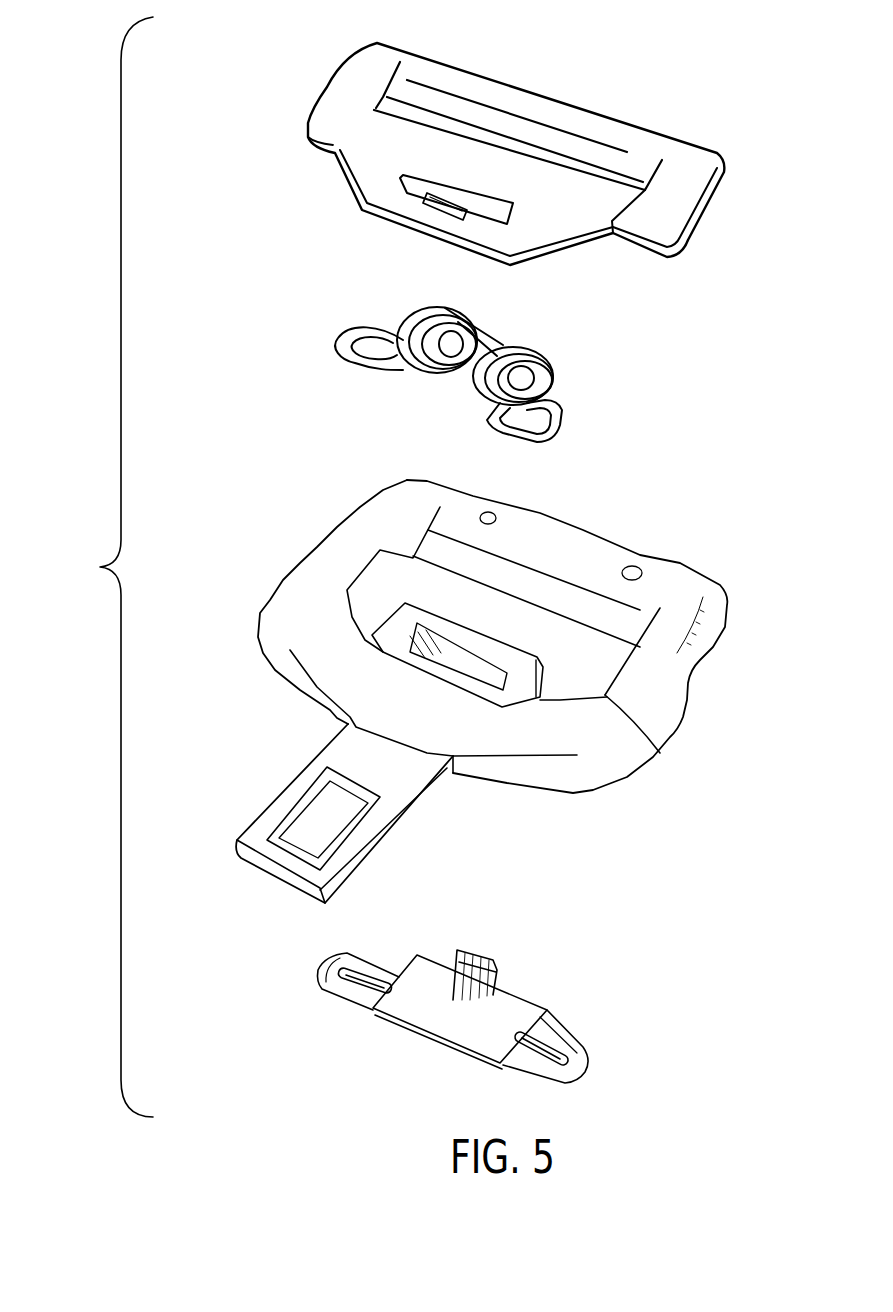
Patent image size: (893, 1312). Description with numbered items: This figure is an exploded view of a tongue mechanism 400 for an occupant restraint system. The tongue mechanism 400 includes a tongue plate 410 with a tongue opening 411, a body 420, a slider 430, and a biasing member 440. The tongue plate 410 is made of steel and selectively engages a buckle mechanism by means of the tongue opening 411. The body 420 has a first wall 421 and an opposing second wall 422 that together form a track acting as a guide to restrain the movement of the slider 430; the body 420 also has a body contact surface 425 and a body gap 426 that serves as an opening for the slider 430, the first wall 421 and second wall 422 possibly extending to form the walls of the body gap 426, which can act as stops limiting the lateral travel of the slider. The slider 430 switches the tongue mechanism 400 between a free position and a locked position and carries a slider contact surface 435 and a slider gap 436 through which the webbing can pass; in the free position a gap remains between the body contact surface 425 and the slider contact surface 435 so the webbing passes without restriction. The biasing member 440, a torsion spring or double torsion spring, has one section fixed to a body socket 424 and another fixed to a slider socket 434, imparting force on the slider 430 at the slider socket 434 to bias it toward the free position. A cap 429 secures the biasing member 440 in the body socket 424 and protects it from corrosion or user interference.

The tongue mechanism 400 is at (100, 567).
The tongue plate 410 is at (253, 842).
The tongue opening 411 is at (343, 817).
The body 420 is at (550, 737).
The first wall 421 is at (660, 752).
The second wall 422 is at (385, 568).
The body socket 424 is at (505, 682).
The body contact surface 425 is at (560, 605).
The body gap 426 is at (567, 640).
The cap 429 is at (343, 1016).
The slider 430 is at (280, 100).
The slider socket 434 is at (488, 212).
The slider contact surface 435 is at (450, 130).
The slider gap 436 is at (583, 167).
The biasing member 440 is at (295, 349).